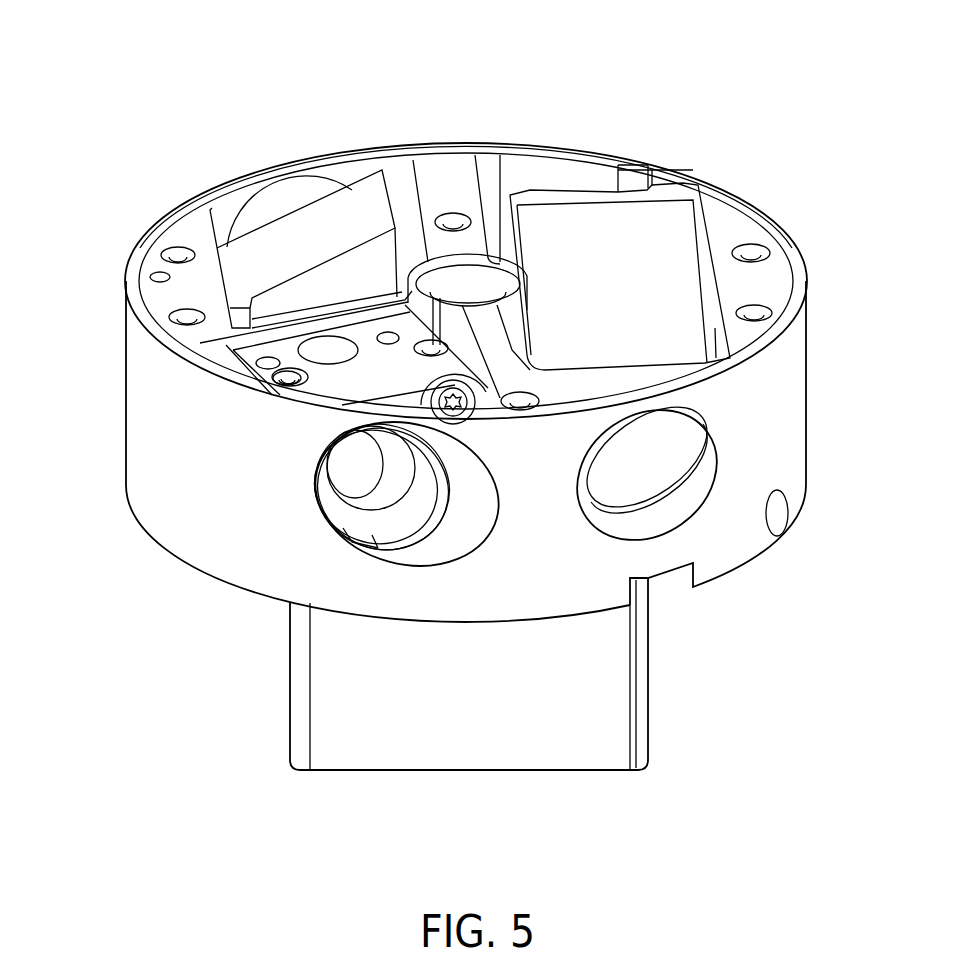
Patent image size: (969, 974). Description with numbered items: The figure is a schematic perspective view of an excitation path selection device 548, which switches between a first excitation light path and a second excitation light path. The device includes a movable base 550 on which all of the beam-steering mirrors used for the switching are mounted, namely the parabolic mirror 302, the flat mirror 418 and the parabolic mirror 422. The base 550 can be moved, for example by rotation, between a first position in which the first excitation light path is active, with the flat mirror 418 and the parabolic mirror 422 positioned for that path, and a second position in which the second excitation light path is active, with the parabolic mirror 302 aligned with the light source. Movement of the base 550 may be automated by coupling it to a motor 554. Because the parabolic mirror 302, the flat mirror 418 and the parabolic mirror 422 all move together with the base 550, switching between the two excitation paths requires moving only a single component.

The excitation path selection device 548 is at (122, 116).
The movable base 550 is at (810, 403).
The motor 554 is at (650, 700).
The parabolic mirror 422 is at (370, 192).
The parabolic mirror 302 is at (665, 228).
The flat mirror 418 is at (320, 385).